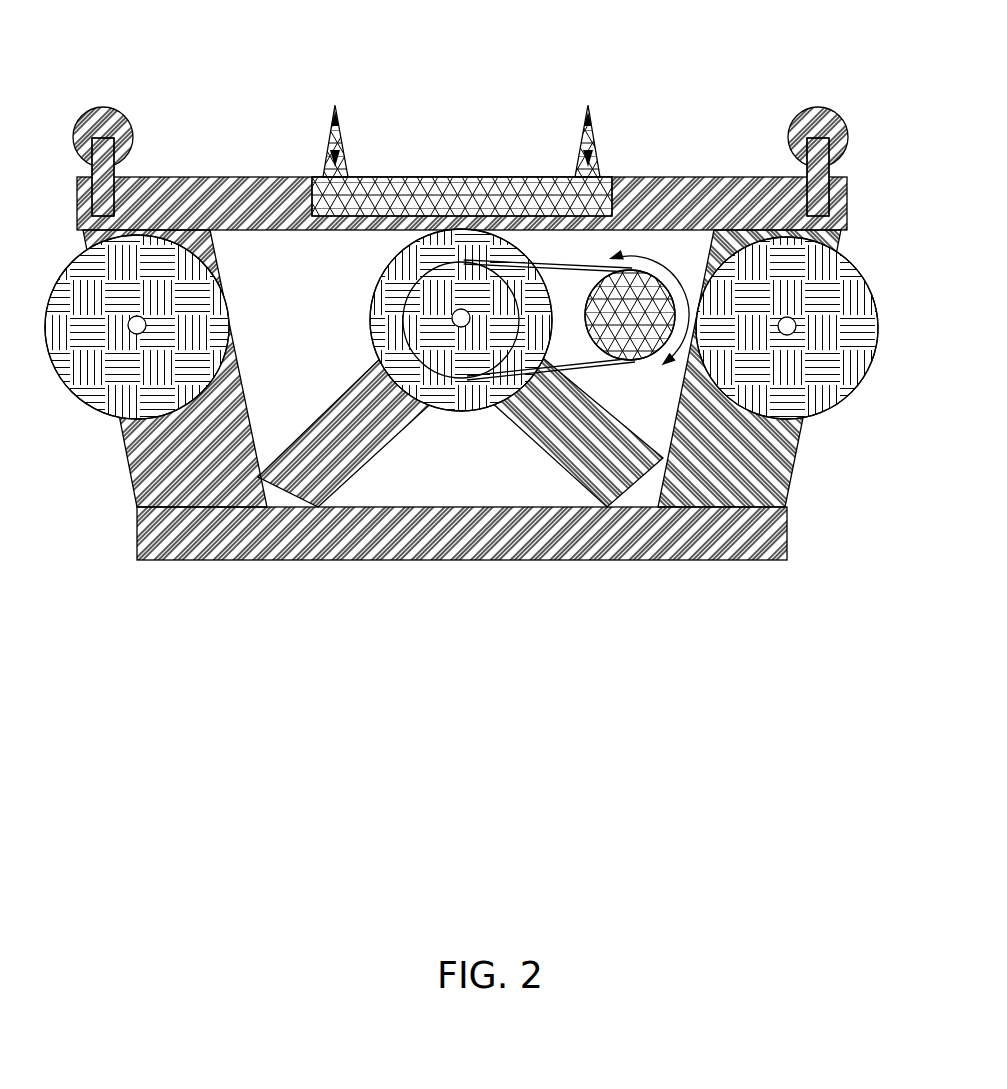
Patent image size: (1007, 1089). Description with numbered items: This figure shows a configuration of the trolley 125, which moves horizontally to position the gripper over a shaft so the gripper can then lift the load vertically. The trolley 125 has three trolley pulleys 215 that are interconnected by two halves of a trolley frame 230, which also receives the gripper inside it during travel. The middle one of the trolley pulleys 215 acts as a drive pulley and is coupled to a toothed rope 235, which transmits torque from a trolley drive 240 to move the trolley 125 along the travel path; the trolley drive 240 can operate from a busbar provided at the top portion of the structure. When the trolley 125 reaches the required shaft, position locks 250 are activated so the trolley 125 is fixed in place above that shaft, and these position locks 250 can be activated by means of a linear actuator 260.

The trolley 125 is at (505, 286).
The trolley pulley 215 is at (405, 295).
The trolley frame 230 is at (762, 450).
The toothed rope 235 is at (515, 390).
The trolley drive 240 is at (623, 313).
The position lock 250 is at (595, 150).
The linear actuator 260 is at (438, 190).